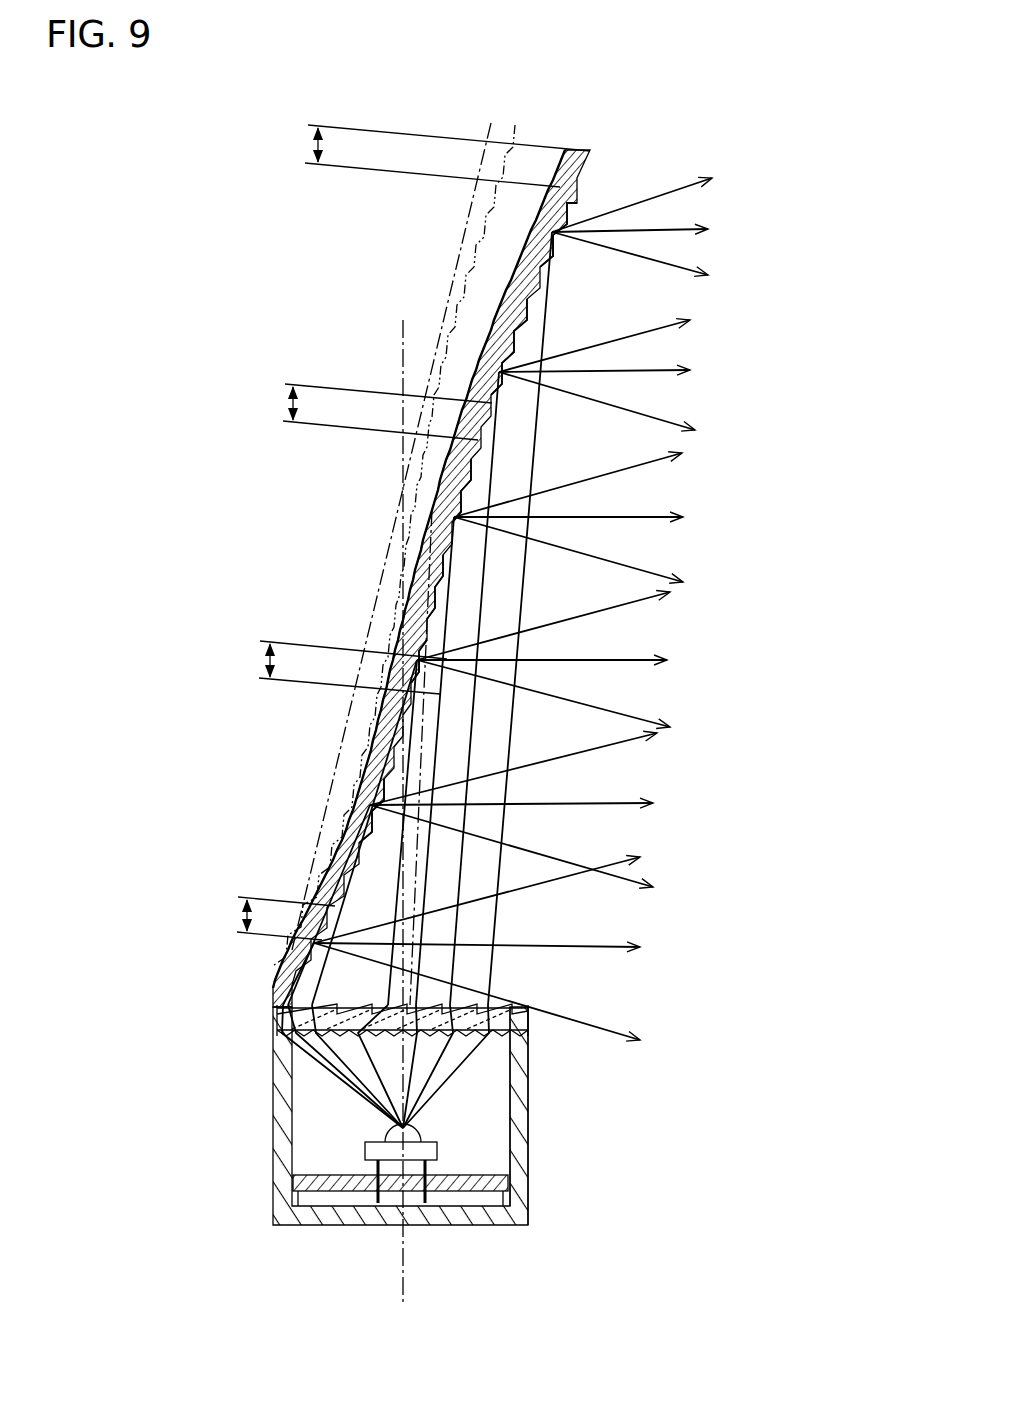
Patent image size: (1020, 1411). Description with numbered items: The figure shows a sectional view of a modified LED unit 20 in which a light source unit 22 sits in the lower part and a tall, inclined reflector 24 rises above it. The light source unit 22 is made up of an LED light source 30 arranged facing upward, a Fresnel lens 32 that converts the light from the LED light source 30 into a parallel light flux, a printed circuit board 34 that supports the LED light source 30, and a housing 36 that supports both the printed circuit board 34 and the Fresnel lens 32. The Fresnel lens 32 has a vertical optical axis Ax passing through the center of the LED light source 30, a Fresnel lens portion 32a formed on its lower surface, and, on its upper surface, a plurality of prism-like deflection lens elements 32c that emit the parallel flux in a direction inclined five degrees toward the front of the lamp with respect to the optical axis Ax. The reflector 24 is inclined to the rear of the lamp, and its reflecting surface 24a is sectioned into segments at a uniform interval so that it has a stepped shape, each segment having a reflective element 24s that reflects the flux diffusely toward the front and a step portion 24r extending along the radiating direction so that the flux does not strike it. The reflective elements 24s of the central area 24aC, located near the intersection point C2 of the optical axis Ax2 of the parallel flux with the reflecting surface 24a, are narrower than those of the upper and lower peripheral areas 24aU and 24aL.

The LED unit 20 is at (330, 310).
The light source unit 22 is at (272, 1052).
The reflector 24 is at (486, 126).
The reflective element 24s is at (553, 231).
The step portion 24r is at (554, 240).
The upper peripheral area 24aU is at (527, 314).
The reflecting surface 24a is at (468, 495).
The central area 24aC is at (420, 658).
The lower peripheral area 24aL is at (346, 890).
The intersection point C2 is at (446, 604).
The optical axis Ax is at (336, 766).
The optical axis of the parallel light flux Ax2 is at (426, 737).
The LED light source 30 is at (385, 1129).
The Fresnel lens 32 is at (530, 1012).
The Fresnel lens portion 32a is at (302, 1038).
The prism-like deflection lens element 32c is at (455, 1010).
The printed circuit board 34 is at (478, 1180).
The housing 36 is at (524, 1113).